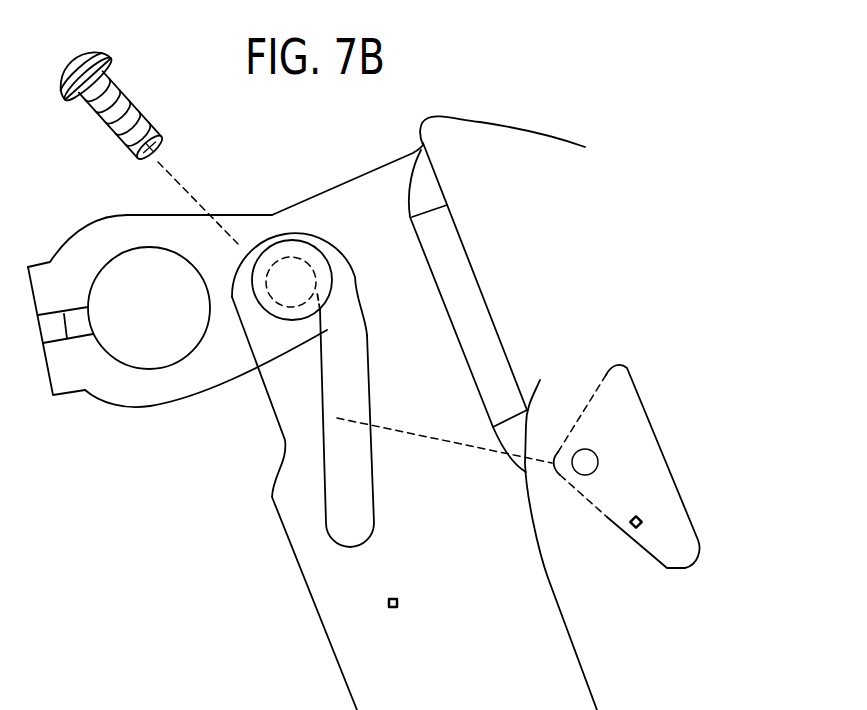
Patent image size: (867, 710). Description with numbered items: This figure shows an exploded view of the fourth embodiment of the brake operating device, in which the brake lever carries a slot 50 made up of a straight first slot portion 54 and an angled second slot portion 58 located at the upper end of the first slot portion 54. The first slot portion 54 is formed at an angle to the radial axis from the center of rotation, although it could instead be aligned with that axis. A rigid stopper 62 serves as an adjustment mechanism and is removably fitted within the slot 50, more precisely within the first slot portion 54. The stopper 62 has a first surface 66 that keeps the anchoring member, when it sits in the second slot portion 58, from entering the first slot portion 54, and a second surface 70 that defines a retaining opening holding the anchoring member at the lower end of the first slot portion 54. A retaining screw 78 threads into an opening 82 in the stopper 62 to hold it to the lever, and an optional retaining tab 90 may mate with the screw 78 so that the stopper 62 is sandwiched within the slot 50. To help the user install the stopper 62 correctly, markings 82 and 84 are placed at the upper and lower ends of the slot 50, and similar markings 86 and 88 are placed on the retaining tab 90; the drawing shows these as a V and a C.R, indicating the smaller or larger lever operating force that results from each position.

The slot 50 is at (324, 436).
The first slot portion 54 is at (368, 473).
The second slot portion 58 is at (343, 263).
The stopper 62 is at (583, 340).
The first surface 66 is at (555, 353).
The second surface 70 is at (592, 577).
The retaining screw 78 is at (67, 68).
The marking 82 is at (373, 190).
The marking 84 is at (365, 623).
The marking 86 is at (622, 367).
The marking 88 is at (693, 535).
The retaining tab 90 is at (671, 487).